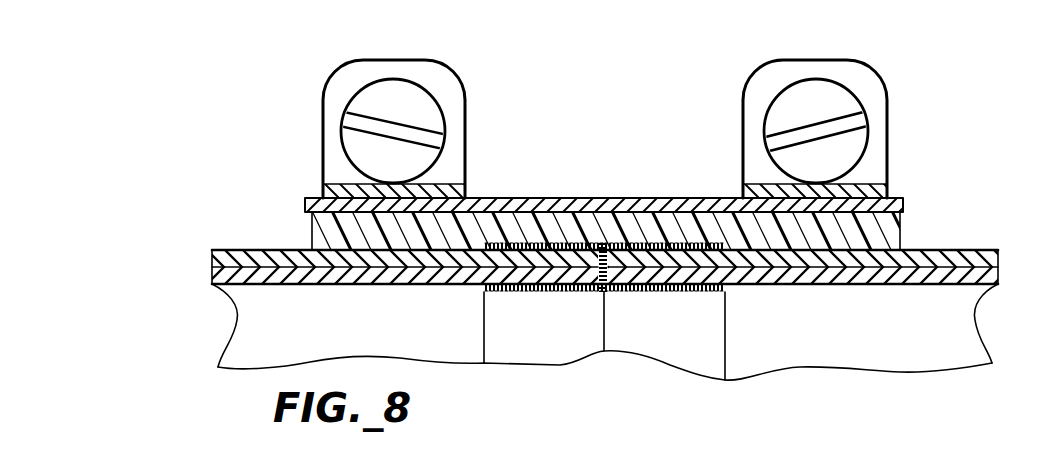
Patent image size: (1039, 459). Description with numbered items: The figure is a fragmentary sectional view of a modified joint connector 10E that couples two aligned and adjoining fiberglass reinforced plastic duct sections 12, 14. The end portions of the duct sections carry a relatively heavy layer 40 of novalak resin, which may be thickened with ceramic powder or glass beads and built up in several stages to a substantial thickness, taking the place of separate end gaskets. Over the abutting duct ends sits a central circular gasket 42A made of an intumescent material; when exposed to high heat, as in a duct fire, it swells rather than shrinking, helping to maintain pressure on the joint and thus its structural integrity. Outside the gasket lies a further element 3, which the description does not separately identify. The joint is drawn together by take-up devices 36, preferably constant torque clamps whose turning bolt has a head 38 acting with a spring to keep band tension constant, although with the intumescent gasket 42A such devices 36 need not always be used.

The modified joint connector 10E is at (560, 135).
The mounting plate 3 is at (582, 197).
The fiberglass reinforced plastic duct section 12 is at (278, 250).
The fiberglass reinforced plastic duct section 14 is at (965, 250).
The take-up device 36 is at (880, 80).
The head 38 is at (818, 88).
The layer of novalak resin 40 is at (479, 292).
The central circular gasket 42A is at (902, 232).